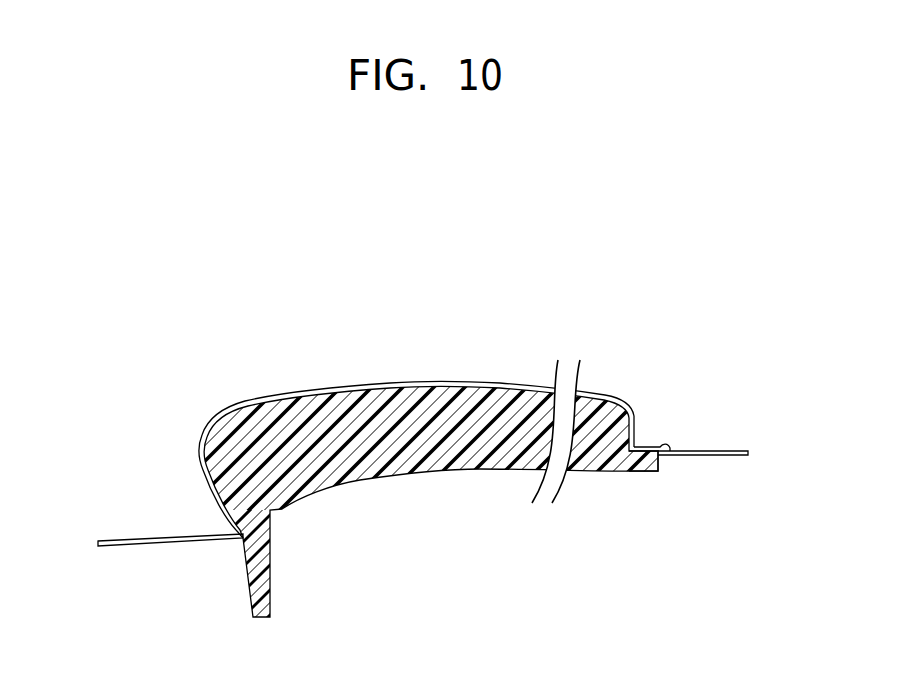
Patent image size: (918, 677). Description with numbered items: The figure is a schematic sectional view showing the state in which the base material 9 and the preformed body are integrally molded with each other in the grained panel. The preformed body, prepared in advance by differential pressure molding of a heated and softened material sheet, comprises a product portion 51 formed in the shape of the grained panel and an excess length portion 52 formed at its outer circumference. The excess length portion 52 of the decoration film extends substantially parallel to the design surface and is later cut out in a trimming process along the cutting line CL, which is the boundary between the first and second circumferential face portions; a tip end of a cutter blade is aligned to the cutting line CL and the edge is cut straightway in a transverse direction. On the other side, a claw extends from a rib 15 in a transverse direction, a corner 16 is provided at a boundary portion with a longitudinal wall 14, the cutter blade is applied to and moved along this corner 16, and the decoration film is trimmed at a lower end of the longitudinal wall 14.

The base material 9 is at (407, 473).
The product portion 51 is at (422, 383).
The longitudinal wall 14 is at (636, 417).
The corner 16 is at (655, 444).
The rib 15 is at (616, 473).
The excess length portion 52 is at (122, 538).
The cutting line CL is at (225, 518).